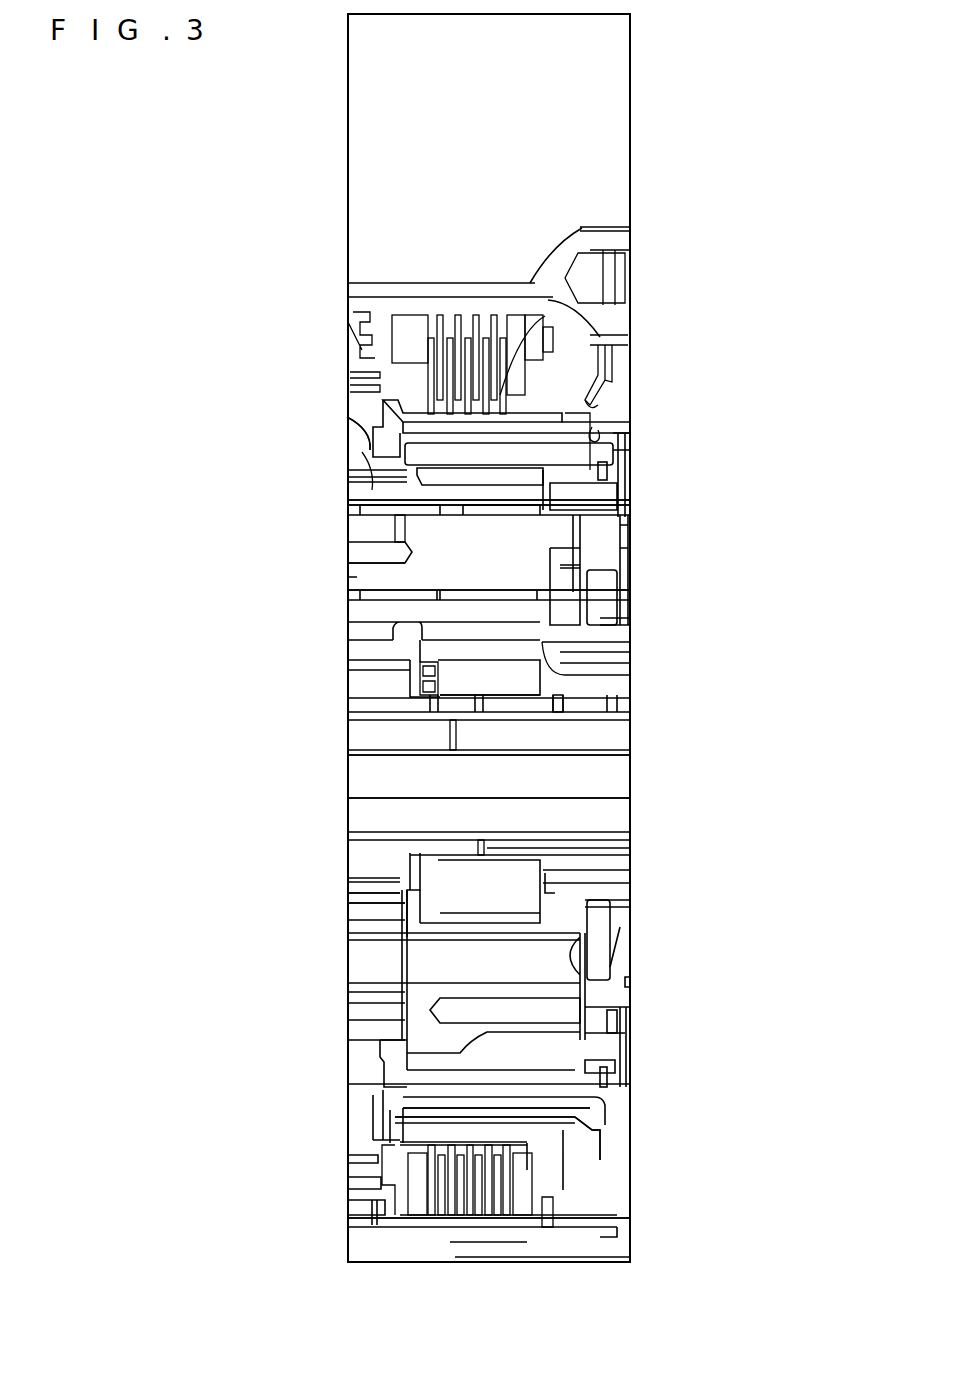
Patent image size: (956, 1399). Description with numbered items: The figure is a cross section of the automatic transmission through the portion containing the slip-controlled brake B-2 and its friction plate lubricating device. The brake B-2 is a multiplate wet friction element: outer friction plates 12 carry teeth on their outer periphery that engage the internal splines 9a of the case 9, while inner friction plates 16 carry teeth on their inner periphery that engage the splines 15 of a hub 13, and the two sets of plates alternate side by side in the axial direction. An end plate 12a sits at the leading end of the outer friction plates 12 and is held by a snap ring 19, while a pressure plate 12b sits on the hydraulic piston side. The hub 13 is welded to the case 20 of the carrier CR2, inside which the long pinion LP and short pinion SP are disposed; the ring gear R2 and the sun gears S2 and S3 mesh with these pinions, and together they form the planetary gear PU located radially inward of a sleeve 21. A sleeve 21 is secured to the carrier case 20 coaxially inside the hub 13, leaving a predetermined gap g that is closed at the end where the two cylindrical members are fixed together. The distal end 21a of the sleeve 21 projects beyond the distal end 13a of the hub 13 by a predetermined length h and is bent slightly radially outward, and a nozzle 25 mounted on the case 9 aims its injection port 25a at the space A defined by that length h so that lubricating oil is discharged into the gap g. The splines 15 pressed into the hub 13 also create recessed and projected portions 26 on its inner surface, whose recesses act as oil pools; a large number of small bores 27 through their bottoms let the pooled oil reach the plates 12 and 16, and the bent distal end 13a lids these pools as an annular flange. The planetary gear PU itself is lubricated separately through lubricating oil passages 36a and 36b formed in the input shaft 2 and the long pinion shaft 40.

The case 9 is at (578, 240).
The internal splines 9a is at (378, 300).
The pressure plate 12b is at (400, 320).
The outer friction plates 12 is at (437, 335).
The inner friction plates 16 is at (493, 335).
The end plate 12a is at (525, 330).
The snap ring 19 is at (560, 320).
The brake B-2 is at (471, 298).
The hub 13 is at (590, 345).
The nozzle 25 is at (625, 372).
The injection port 25a is at (587, 412).
The sleeve 21 is at (600, 420).
The ring gear R2 is at (612, 450).
The space A is at (572, 420).
The planetary gear PU is at (670, 536).
The carrier case 20 is at (370, 450).
The splines 15 is at (410, 407).
The long pinion LP is at (365, 490).
The carrier CR2 is at (338, 512).
The lubricating oil passage 36b is at (365, 553).
The long pinion shaft 40 is at (362, 580).
The sun gear S3 is at (362, 697).
The sun gear S2 is at (570, 650).
The lubricating oil passage 36a is at (549, 706).
The input shaft 2 is at (610, 738).
The short pinion SP is at (358, 905).
The recessed/projected portions 26 is at (487, 1128).
The gap g is at (535, 1080).
The predetermined length h is at (570, 1150).
The distal end of sleeve 21a is at (605, 1117).
The distal end of hub 13a is at (575, 1208).
The small bores 27 is at (500, 1150).